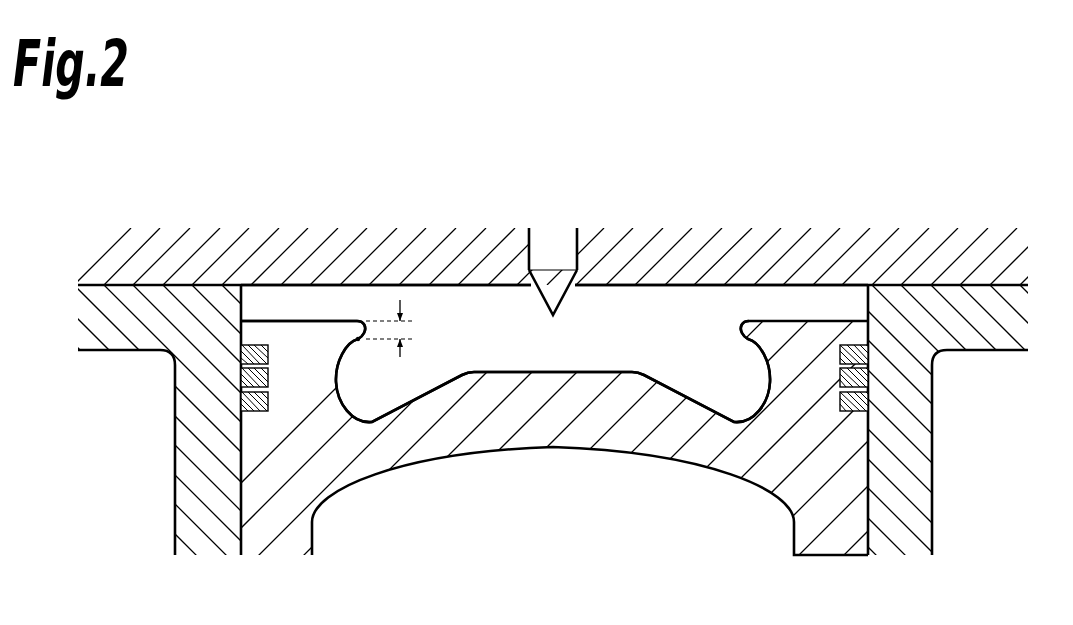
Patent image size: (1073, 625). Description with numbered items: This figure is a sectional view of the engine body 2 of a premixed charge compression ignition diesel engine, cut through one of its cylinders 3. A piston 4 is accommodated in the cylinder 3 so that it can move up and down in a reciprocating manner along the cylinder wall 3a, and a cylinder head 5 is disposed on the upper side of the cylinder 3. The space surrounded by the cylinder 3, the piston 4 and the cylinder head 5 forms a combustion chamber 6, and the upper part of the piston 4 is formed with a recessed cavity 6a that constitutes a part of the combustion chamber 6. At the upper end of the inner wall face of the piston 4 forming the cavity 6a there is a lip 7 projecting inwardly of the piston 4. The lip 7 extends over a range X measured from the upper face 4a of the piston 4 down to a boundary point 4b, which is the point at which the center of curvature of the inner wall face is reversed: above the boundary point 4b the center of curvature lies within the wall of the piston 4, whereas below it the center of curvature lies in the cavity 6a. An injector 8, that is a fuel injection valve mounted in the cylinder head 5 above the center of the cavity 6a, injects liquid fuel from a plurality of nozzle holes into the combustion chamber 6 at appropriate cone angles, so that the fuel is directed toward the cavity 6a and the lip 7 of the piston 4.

The engine body 2 is at (349, 192).
The cylinder 3 is at (917, 467).
The cylinder bore 3a is at (242, 298).
The piston 4 is at (567, 443).
The upper face of the piston 4a is at (302, 320).
The boundary point 4b is at (358, 341).
The cylinder head 5 is at (823, 255).
The combustion chamber 6 is at (628, 307).
The cavity 6a is at (410, 383).
The lip 7 is at (752, 332).
The injector 8 is at (527, 256).
The range X is at (403, 328).